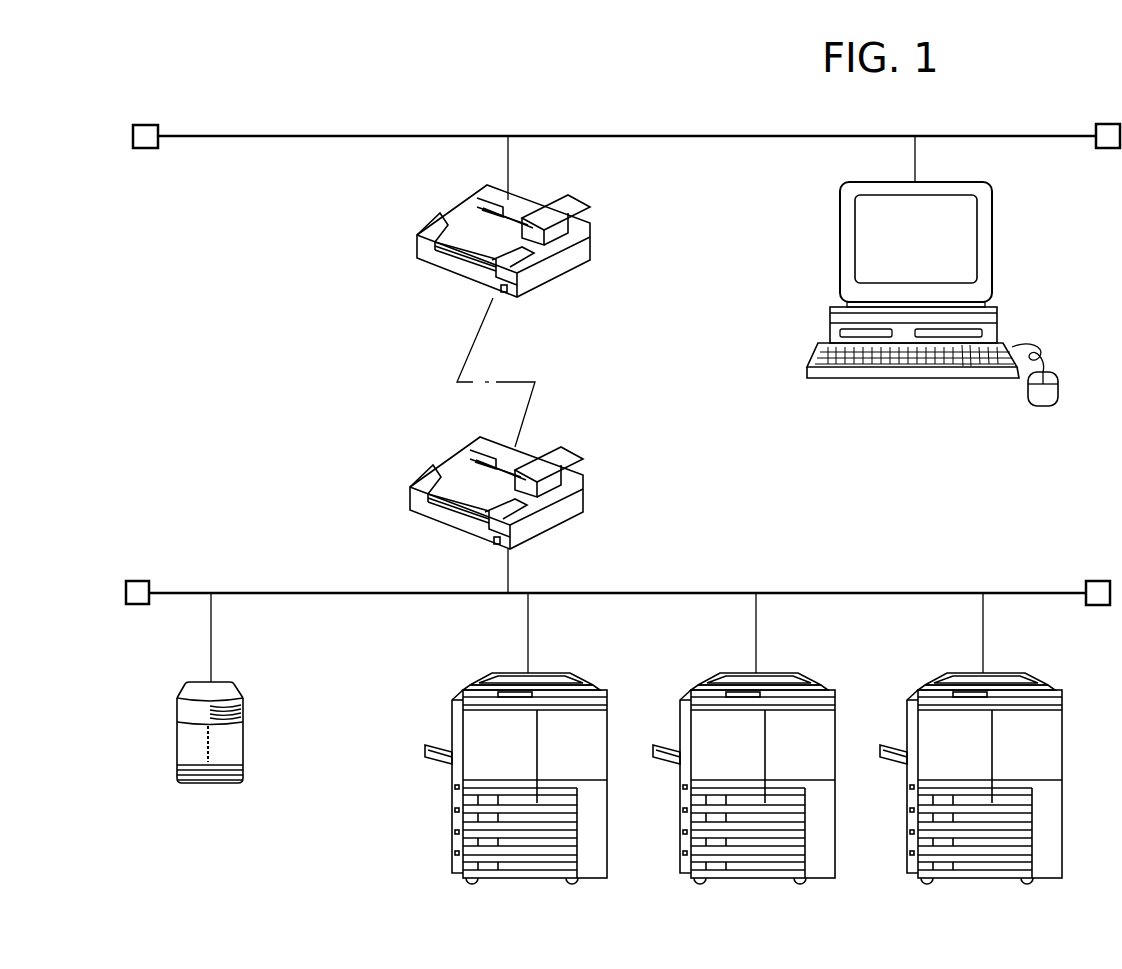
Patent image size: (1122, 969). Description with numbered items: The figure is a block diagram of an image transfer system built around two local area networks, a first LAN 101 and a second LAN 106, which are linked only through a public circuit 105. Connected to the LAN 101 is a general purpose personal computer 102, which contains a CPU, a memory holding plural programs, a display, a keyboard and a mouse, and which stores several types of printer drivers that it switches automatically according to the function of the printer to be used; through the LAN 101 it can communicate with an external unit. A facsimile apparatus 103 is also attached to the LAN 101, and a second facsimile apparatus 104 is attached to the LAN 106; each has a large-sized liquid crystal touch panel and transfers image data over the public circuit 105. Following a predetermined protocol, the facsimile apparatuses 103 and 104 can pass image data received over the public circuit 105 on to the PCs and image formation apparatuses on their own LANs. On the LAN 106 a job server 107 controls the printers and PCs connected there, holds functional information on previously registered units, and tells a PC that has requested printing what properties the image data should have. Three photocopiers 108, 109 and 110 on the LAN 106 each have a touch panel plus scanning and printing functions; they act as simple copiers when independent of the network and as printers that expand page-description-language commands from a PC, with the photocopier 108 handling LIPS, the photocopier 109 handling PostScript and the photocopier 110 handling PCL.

The LAN 101 is at (593, 134).
The general purpose personal computer 102 is at (993, 230).
The facsimile apparatus 103 is at (597, 245).
The facsimile apparatus 104 is at (592, 475).
The public circuit 105 is at (517, 380).
The LAN 106 is at (619, 592).
The job server 107 is at (193, 786).
The photocopier 108 is at (554, 670).
The photocopier 109 is at (783, 670).
The photocopier 110 is at (1008, 670).